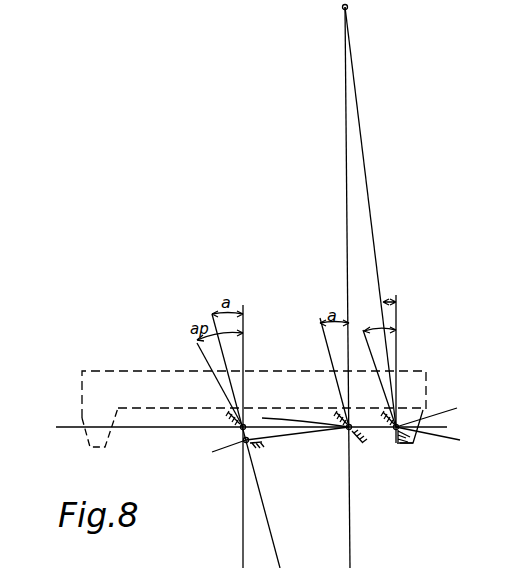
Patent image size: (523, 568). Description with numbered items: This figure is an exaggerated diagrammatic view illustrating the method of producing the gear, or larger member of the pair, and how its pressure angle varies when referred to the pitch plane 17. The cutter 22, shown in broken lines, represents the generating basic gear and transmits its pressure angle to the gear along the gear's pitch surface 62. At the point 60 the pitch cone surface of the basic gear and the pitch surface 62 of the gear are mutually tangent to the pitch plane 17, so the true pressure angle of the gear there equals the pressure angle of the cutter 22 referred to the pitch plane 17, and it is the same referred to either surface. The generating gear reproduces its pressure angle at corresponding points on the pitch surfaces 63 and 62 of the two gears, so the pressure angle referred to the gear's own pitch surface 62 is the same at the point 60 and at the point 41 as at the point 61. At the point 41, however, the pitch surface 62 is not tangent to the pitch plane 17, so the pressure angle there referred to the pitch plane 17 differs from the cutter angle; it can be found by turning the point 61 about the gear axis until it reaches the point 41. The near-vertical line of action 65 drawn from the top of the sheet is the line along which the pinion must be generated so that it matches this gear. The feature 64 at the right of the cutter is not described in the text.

The line of action 65 is at (348, 7).
The cutter 22 is at (428, 387).
The pitch plane 17 is at (58, 427).
The point 41 is at (240, 431).
The point 60 is at (346, 432).
The point 61 is at (395, 432).
The pitch surface 63 is at (440, 412).
The pitch surface 62 is at (458, 438).
The stop 64 is at (409, 443).